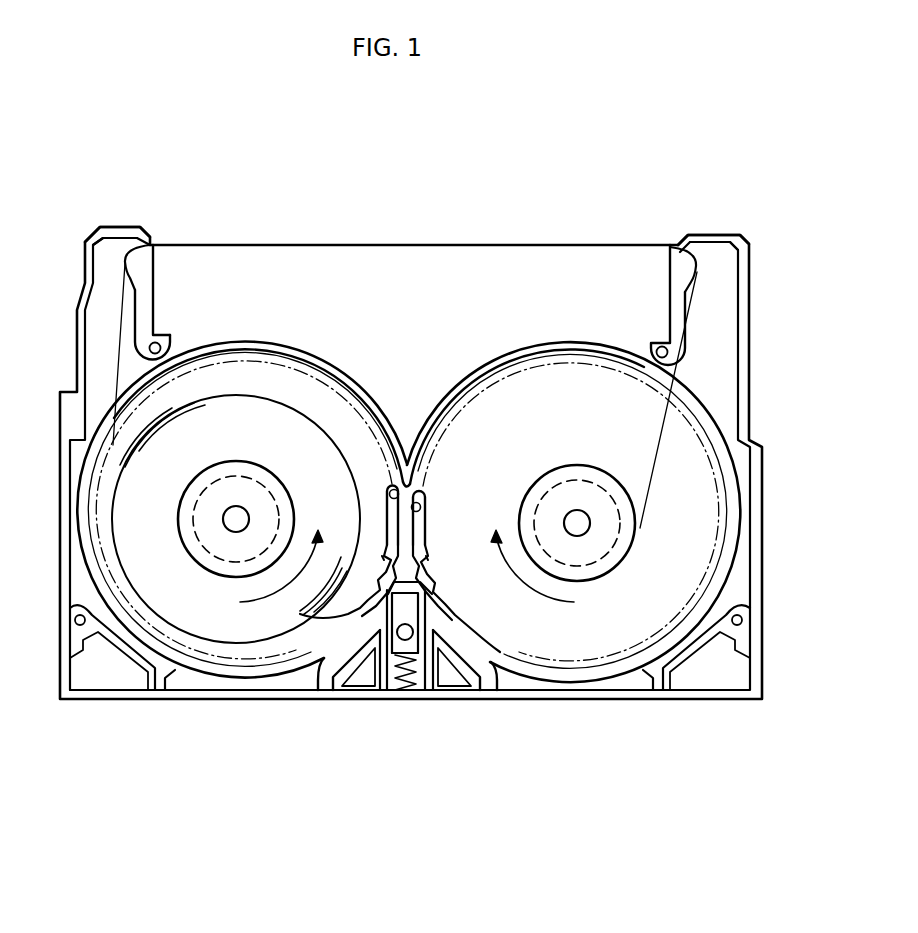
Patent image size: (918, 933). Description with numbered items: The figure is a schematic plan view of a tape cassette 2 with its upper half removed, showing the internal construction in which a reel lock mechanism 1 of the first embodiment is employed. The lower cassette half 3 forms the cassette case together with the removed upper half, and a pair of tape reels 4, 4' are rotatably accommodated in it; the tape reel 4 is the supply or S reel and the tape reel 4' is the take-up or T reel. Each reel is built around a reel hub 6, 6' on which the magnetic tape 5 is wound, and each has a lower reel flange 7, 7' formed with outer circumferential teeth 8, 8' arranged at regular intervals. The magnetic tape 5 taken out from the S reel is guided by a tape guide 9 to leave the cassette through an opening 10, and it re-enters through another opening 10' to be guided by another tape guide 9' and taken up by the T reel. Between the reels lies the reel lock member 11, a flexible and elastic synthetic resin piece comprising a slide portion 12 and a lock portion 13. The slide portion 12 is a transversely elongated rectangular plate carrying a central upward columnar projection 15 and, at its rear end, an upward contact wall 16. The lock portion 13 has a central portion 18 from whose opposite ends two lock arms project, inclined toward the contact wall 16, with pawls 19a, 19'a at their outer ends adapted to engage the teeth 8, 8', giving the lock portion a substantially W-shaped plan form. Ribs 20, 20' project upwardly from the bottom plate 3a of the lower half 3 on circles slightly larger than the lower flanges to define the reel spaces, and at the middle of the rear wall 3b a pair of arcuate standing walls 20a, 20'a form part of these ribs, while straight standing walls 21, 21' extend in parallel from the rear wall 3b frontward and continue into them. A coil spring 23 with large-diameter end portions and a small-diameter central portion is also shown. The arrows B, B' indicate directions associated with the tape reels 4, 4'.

The reel lock mechanism 1 is at (258, 753).
The tape cassette 2 is at (770, 462).
The cassette half (lower half) 3 is at (770, 518).
The bottom plate 3a is at (168, 690).
The rear wall 3b is at (612, 700).
The tape reel (supply reel) 4 is at (258, 386).
The tape reel (take-up reel) 4' is at (527, 386).
The magnetic tape 5 is at (282, 245).
The reel hub 6 is at (238, 502).
The reel hub 6' is at (577, 501).
The lower reel flange 7 is at (242, 485).
The lower reel flange 7' is at (572, 479).
The outer circumferential teeth 8 is at (337, 600).
The outer circumferential teeth 8' is at (463, 557).
The tape guide 9 is at (95, 345).
The tape guide 9' is at (716, 387).
The opening 10 is at (119, 199).
The opening 10' is at (710, 208).
The reel lock member 11 is at (430, 584).
The slide portion 12 is at (366, 665).
The lock portion 13 is at (385, 556).
The columnar projection 15 is at (413, 634).
The contact wall 16 is at (432, 655).
The central portion 18 is at (424, 560).
The pawl 19a is at (302, 610).
The pawl 19'a is at (571, 512).
The ribs 20 is at (238, 514).
The ribs 20' is at (577, 535).
The arcuate standing wall 20a is at (316, 658).
The arcuate standing wall 20'a is at (506, 695).
The straight standing wall 21 is at (369, 707).
The straight standing wall 21' is at (468, 689).
The coil spring 23 is at (390, 668).
The reel rotation direction B is at (264, 572).
The reel rotation direction B' is at (544, 572).